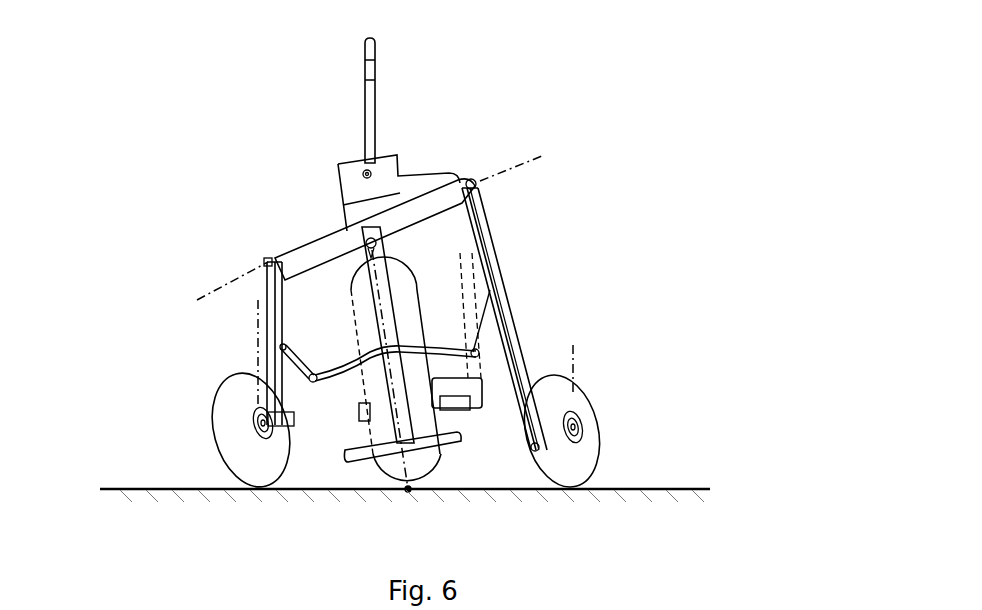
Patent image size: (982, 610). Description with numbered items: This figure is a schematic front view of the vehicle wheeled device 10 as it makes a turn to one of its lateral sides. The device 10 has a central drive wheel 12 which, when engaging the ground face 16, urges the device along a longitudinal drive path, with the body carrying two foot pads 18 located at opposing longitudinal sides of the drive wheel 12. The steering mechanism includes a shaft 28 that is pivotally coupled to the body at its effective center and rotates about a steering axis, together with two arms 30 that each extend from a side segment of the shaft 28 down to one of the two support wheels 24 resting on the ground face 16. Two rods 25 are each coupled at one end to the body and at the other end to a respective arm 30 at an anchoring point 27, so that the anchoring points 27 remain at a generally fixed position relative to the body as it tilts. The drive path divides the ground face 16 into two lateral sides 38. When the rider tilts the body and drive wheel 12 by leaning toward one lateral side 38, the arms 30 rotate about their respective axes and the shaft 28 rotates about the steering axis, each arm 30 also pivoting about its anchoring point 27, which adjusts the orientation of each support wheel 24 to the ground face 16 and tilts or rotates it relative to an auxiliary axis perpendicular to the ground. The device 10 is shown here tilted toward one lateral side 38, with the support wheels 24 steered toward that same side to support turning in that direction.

The vehicle wheeled device 10 is at (178, 187).
The drive wheel 12 is at (368, 372).
The ground face 16 is at (692, 485).
The foot pads 18 is at (462, 444).
The support wheels 24 is at (237, 412).
The rods 25 is at (294, 366).
The anchoring point 27 is at (507, 295).
The shaft 28 is at (313, 242).
The arms 30 is at (268, 322).
The lateral sides 38 is at (338, 485).